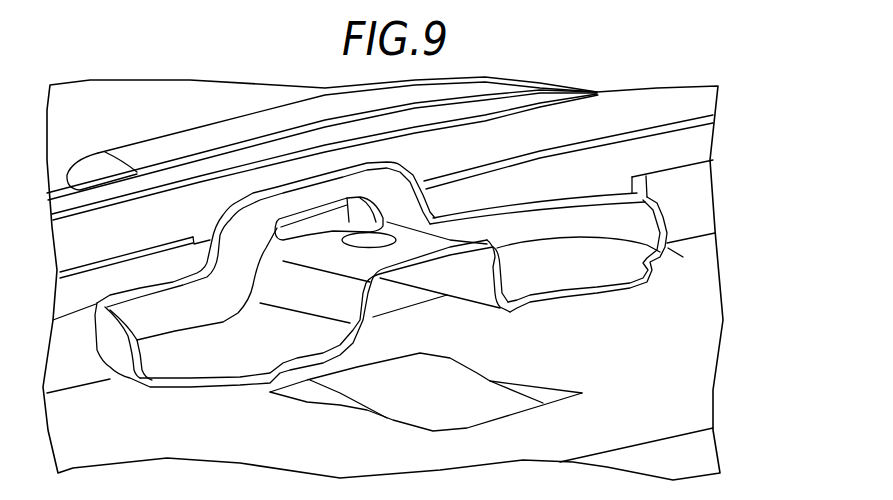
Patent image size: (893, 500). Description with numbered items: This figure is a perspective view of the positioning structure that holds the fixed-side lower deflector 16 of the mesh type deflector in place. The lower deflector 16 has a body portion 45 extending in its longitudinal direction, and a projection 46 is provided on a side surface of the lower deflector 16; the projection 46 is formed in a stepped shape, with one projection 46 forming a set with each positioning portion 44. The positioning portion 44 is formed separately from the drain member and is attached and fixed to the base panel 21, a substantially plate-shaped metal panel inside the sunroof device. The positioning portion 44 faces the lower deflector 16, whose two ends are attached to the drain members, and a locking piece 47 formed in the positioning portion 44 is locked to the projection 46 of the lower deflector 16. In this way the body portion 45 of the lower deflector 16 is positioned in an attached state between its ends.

The lower deflector 16 is at (104, 181).
The base panel 21 is at (693, 316).
The positioning portion 44 is at (212, 388).
The body portion 45 is at (172, 212).
The projection 46 is at (305, 222).
The locking piece 47 is at (350, 166).